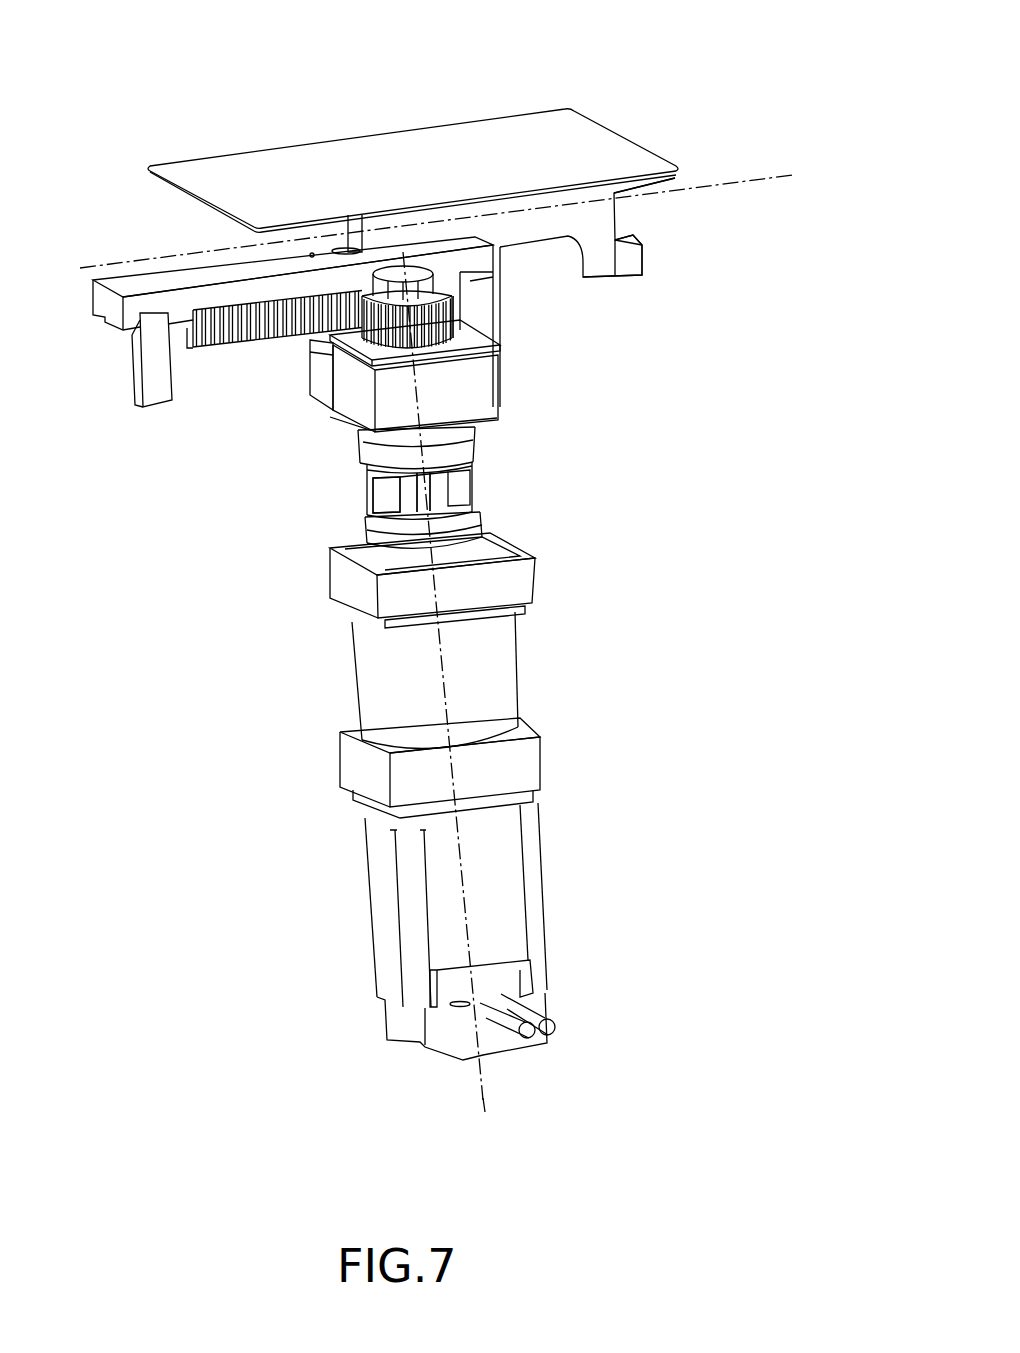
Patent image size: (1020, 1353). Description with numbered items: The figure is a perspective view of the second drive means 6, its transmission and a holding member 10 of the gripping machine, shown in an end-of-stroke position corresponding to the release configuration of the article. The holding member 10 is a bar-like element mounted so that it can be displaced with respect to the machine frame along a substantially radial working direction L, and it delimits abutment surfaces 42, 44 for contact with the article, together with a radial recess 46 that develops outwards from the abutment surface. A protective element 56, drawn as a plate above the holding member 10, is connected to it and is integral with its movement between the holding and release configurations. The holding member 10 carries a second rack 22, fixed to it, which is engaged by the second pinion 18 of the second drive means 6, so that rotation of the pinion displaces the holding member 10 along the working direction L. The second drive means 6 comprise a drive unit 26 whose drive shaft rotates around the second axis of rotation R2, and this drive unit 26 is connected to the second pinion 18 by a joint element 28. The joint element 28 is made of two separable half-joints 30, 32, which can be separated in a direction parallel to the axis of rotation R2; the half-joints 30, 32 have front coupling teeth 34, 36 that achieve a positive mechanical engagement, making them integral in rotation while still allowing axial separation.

The second drive means 6 is at (567, 659).
The holding member 10 is at (560, 257).
The second pinion 18 is at (460, 306).
The second rack 22 is at (247, 356).
The drive unit 26 is at (540, 869).
The joint element 28 is at (517, 494).
The half-joint 30 is at (358, 449).
The half-joint 32 is at (358, 530).
The front coupling teeth 34 is at (388, 505).
The front coupling teeth 36 is at (437, 490).
The abutment surface 42 is at (679, 170).
The abutment surface 44 is at (646, 262).
The radial recess 46 is at (640, 213).
The protective element 56 is at (200, 172).
The working direction L is at (783, 173).
The second axis of rotation R2 is at (487, 1097).